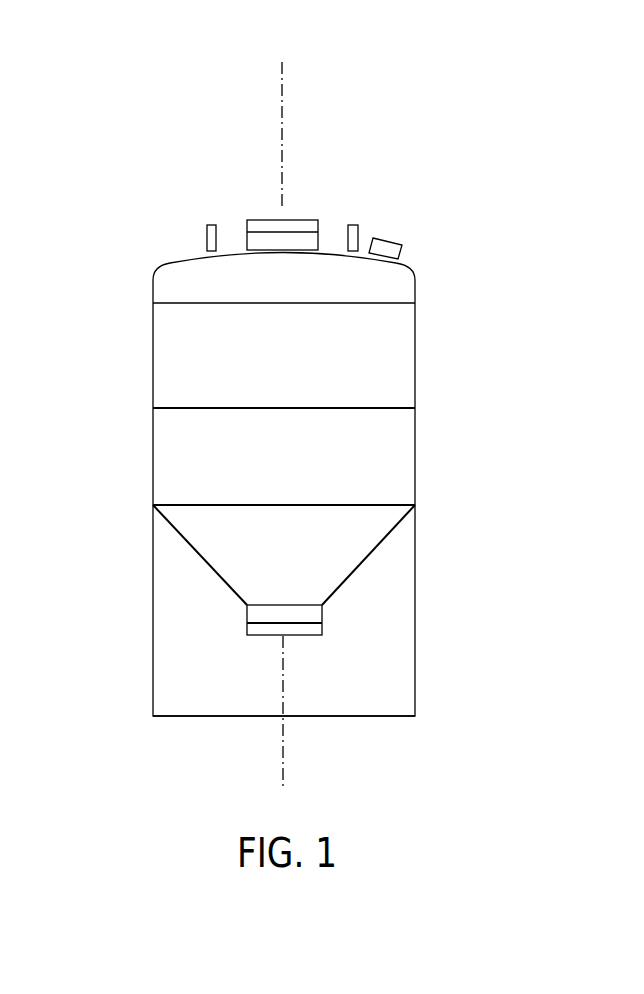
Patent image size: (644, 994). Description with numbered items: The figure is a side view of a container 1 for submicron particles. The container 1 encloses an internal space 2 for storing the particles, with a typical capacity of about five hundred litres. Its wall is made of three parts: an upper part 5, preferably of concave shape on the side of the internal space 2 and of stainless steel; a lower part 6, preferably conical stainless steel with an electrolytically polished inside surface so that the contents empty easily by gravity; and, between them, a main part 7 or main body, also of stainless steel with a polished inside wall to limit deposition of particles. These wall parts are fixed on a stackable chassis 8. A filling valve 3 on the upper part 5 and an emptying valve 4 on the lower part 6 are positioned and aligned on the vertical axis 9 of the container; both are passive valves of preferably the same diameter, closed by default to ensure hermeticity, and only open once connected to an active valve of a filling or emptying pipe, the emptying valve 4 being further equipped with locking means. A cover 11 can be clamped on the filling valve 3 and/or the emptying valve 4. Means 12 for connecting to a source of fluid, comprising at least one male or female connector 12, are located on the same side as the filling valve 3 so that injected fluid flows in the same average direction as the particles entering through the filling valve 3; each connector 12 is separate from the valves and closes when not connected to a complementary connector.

The container 1 is at (502, 223).
The internal space 2 is at (397, 457).
The filling valve 3 is at (308, 240).
The emptying valve 4 is at (310, 612).
The upper part of a wall 5 is at (407, 283).
The lower part of a wall 6 is at (355, 550).
The main part of a wall 7 is at (137, 302).
The stackable chassis 8 is at (417, 688).
The vertical axis 9 is at (282, 104).
The cover 11 is at (267, 225).
The means for connecting to a source of fluid 12 is at (207, 227).